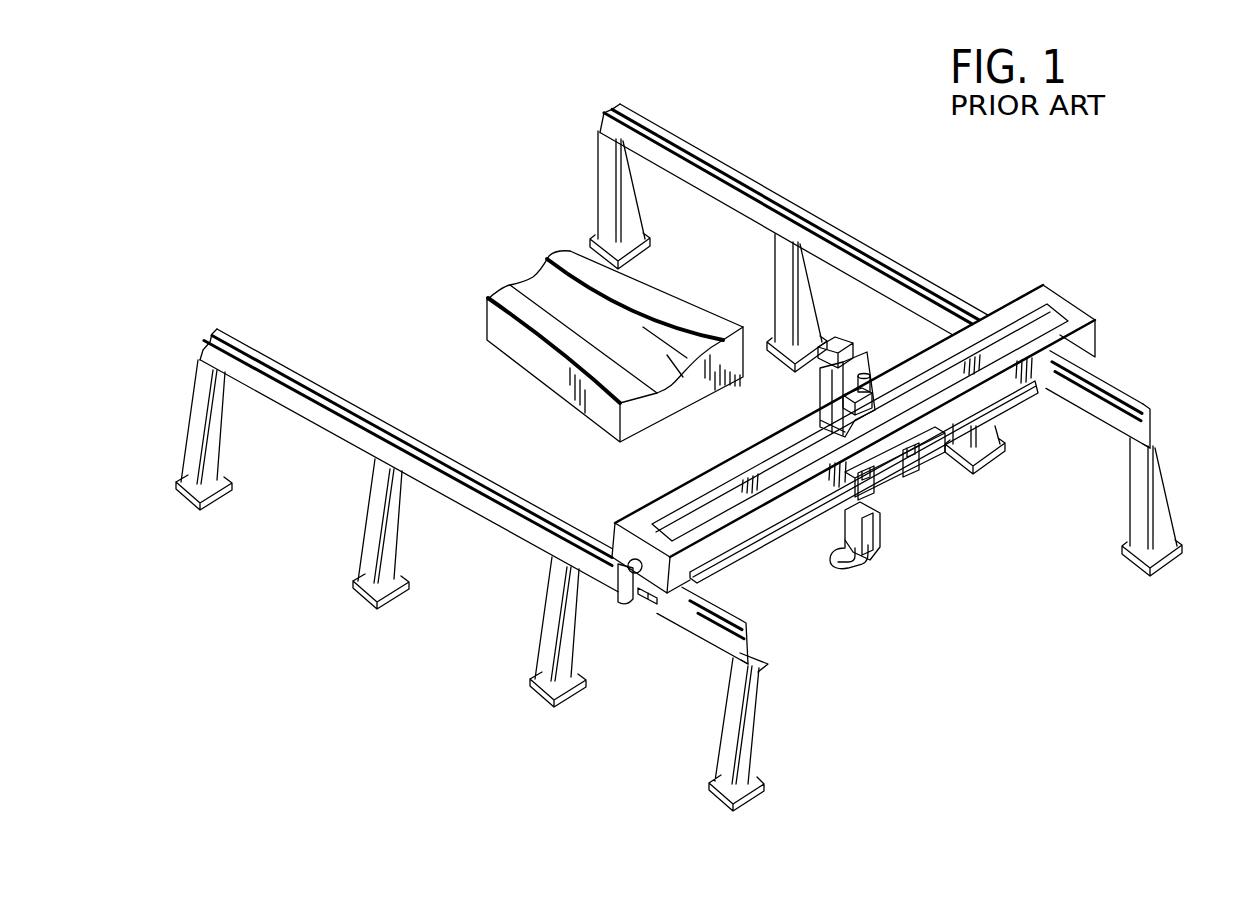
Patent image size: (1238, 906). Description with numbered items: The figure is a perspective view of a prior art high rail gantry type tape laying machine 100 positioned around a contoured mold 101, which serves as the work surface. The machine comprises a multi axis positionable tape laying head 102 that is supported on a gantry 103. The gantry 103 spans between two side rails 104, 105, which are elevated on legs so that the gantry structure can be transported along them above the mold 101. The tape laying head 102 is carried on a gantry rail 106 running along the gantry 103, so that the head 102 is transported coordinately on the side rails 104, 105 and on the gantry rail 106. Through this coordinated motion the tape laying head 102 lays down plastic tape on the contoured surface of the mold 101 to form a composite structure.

The tape laying machine 100 is at (578, 152).
The contoured mold 101 is at (583, 337).
The tape laying head 102 is at (882, 552).
The gantry 103 is at (1074, 299).
The side rail 104 is at (1125, 392).
The side rail 105 is at (713, 606).
The gantry rail 106 is at (757, 550).